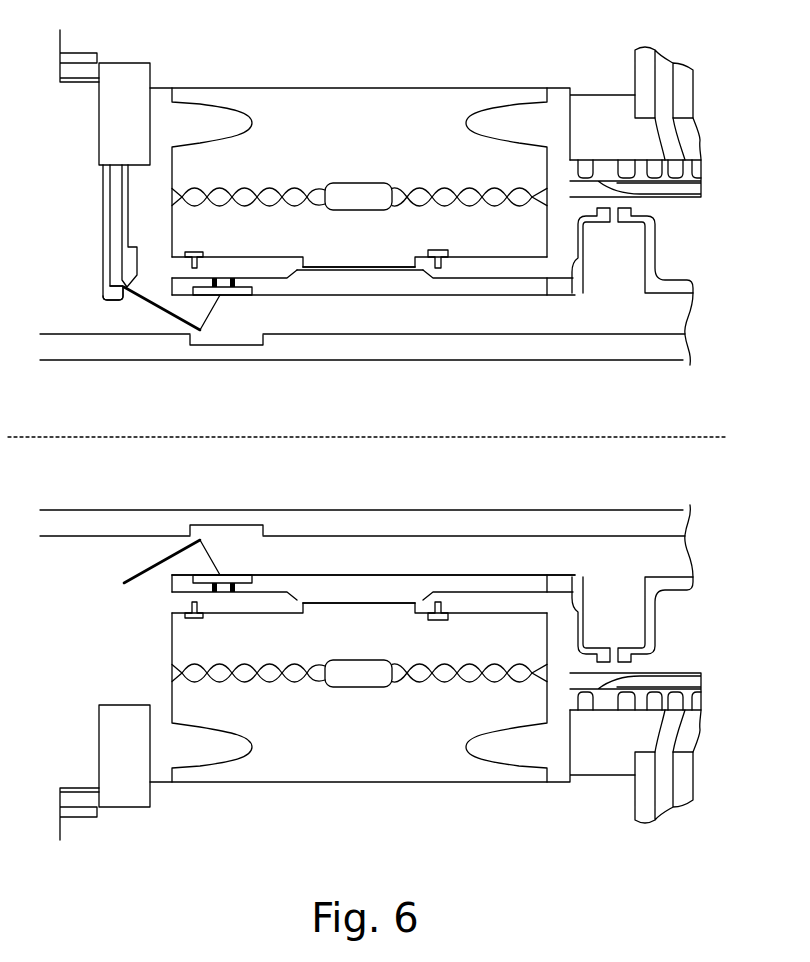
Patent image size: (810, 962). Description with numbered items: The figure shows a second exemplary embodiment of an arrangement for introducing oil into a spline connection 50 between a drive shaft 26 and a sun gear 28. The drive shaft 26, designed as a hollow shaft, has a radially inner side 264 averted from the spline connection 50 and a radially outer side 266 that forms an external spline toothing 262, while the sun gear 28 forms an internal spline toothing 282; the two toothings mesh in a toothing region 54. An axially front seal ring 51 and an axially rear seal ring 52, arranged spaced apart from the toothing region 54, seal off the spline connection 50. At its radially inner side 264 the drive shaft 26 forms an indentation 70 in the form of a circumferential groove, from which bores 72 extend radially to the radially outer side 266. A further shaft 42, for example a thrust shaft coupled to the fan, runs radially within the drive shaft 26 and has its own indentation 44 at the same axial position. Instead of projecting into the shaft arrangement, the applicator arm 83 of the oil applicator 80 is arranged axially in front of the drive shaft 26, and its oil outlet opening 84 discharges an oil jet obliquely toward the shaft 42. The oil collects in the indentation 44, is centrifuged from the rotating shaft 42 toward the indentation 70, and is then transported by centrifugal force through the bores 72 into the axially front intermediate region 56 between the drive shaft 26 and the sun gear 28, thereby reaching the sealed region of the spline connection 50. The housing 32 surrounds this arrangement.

The housing 32 is at (432, 105).
The oil applicator 80 is at (103, 205).
The axially front seal ring 51 is at (185, 257).
The applicator arm 83 is at (103, 280).
The oil outlet opening 84 is at (118, 287).
The indentation 44 is at (230, 342).
The indentation 70 is at (257, 291).
The further shaft 42 is at (398, 358).
The external spline toothing 262 is at (385, 270).
The axially rear seal ring 52 is at (440, 268).
The drive shaft 26 is at (512, 287).
The sun gear 28 is at (535, 240).
The internal spline toothing 282 is at (378, 266).
The spline connection 50 is at (289, 257).
The axially front intermediate region 56 is at (265, 272).
The bores 72 is at (232, 284).
The radially inner side 264 is at (355, 575).
The radially outer side 266 is at (273, 592).
The toothing region 54 is at (353, 616).